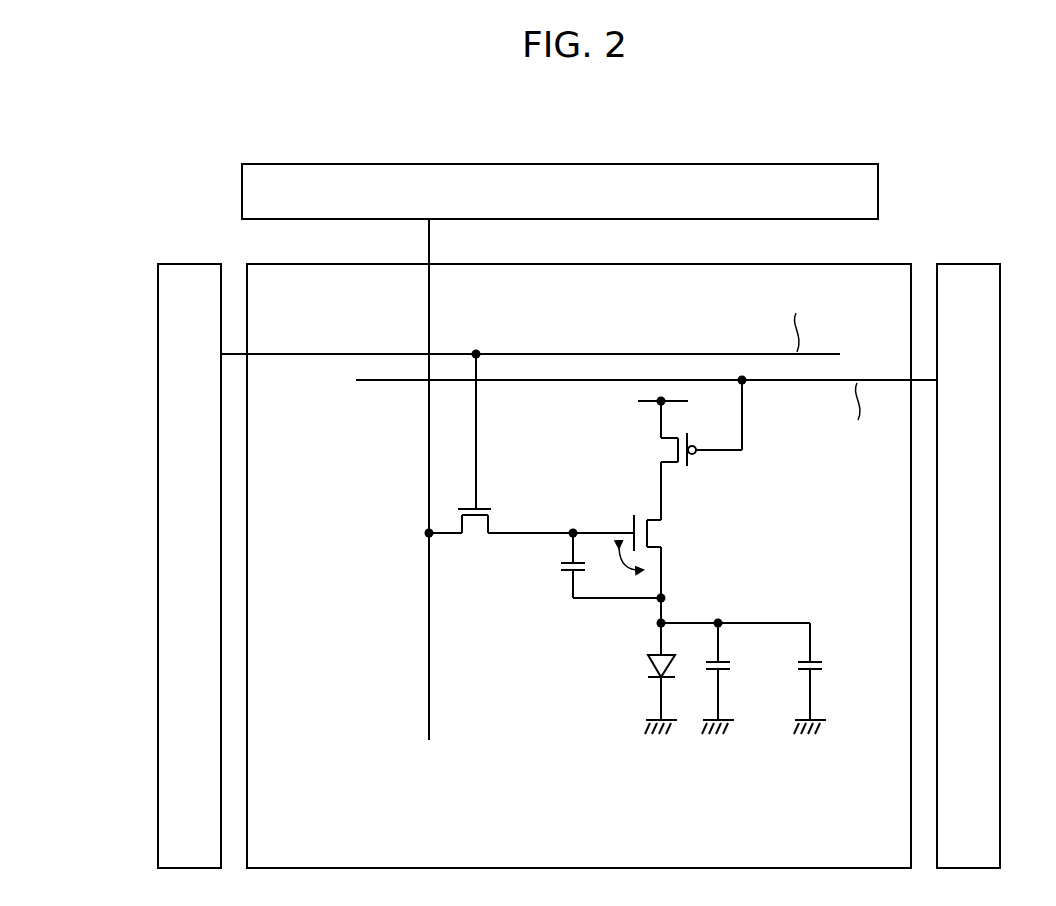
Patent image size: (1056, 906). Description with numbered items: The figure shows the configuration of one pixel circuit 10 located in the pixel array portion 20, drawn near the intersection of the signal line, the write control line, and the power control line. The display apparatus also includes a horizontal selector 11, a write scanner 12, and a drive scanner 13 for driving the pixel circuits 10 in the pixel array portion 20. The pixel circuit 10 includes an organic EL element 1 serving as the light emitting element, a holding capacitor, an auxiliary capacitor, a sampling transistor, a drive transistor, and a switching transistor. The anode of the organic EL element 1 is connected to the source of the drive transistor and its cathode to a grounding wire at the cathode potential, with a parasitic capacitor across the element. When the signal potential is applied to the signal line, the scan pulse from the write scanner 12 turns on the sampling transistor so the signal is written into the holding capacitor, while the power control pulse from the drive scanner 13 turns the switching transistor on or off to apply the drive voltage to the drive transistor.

The organic EL element 1 is at (648, 665).
The pixel circuit 10 is at (579, 494).
The horizontal selector 11 is at (860, 164).
The write scanner 12 is at (203, 264).
The drive scanner 13 is at (968, 264).
The pixel array portion 20 is at (896, 264).